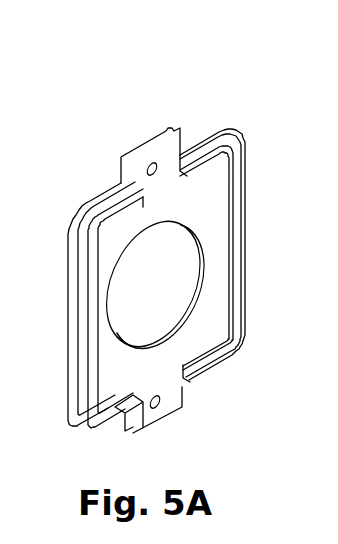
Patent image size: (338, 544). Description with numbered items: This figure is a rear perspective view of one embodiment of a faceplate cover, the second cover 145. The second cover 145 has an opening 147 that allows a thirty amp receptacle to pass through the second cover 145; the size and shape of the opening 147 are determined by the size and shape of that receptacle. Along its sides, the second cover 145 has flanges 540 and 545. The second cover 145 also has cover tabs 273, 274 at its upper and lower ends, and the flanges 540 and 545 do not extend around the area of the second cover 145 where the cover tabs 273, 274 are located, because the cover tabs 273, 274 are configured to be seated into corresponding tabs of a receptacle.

The second cover 145 is at (162, 261).
The opening 147 is at (200, 250).
The cover tab 273 is at (173, 151).
The cover tab 274 is at (174, 388).
The flange 540 is at (67, 320).
The flange 545 is at (242, 305).